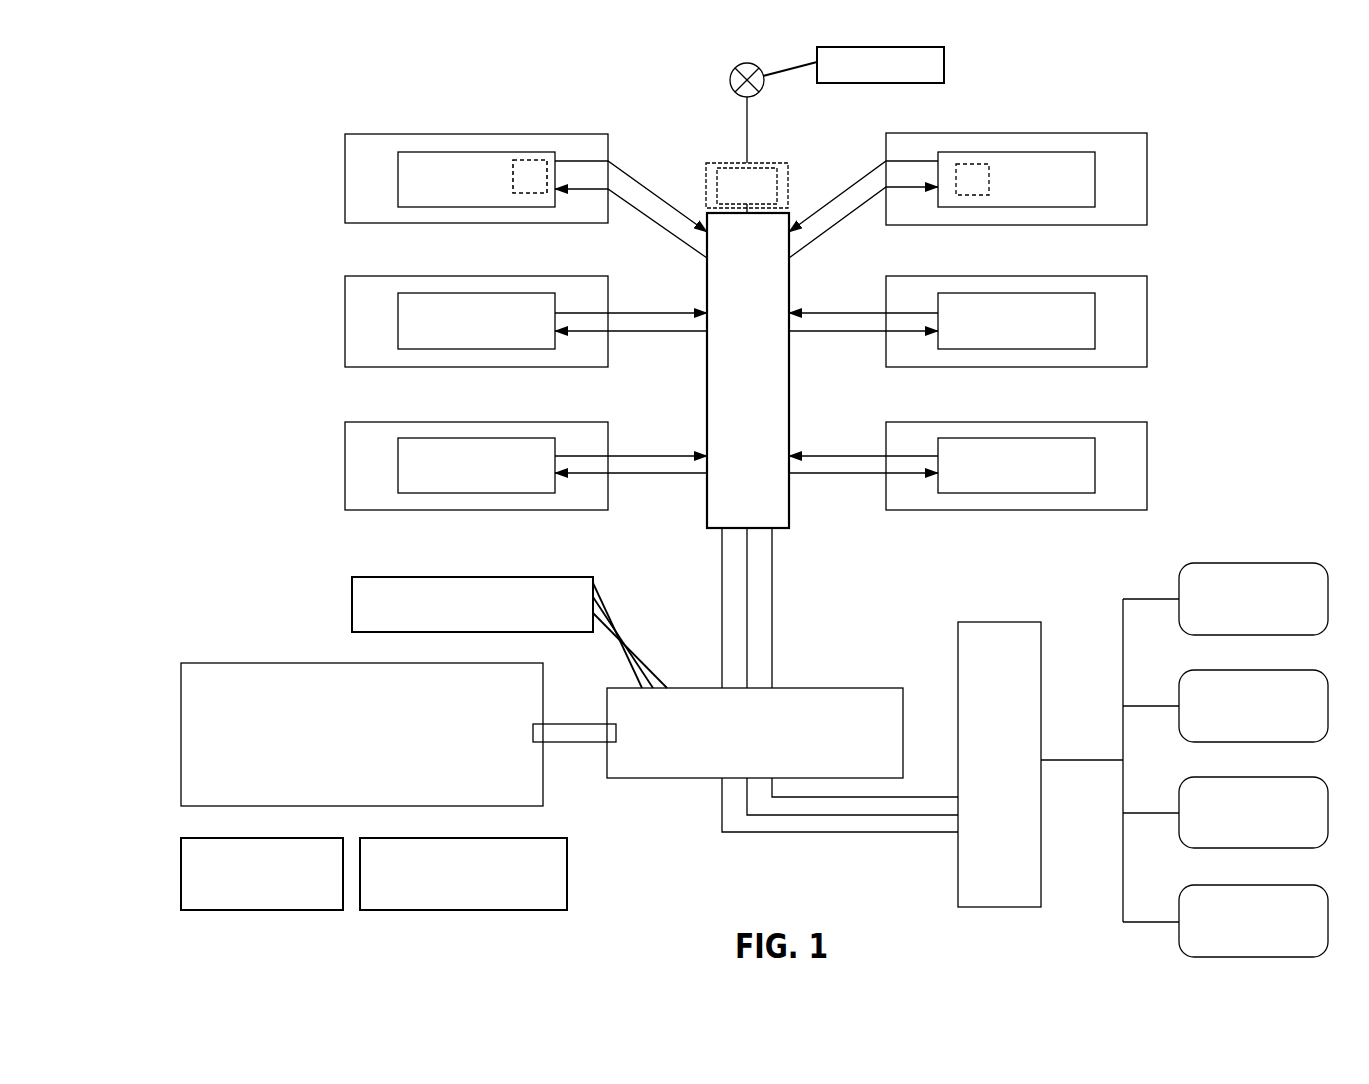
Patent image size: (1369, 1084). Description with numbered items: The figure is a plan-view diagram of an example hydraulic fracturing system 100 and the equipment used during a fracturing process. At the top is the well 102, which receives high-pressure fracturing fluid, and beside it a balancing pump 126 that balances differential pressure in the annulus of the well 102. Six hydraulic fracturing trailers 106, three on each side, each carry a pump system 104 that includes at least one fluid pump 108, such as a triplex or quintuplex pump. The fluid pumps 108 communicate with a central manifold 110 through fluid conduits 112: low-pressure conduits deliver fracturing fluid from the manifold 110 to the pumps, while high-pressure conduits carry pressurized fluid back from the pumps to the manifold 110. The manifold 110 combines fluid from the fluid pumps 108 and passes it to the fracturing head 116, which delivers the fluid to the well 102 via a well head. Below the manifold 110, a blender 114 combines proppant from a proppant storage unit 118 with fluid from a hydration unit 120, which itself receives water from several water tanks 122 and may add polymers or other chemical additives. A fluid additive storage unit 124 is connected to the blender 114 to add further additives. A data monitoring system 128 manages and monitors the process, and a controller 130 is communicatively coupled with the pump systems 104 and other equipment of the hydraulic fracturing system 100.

The hydraulic fracturing system 100 is at (172, 62).
The well 102 is at (733, 75).
The pump system 104 is at (462, 191).
The hydraulic fracturing trailer 106 is at (345, 134).
The fluid pump 108 is at (527, 160).
The manifold 110 is at (707, 378).
The fluid conduit 112 is at (826, 497).
The blender 114 is at (737, 744).
The fracturing head 116 is at (727, 198).
The proppant storage unit 118 is at (343, 744).
The hydration unit 120 is at (980, 774).
The water tank 122 is at (1234, 611).
The fluid additive storage unit 124 is at (452, 615).
The balancing pump 126 is at (860, 76).
The data monitoring system 128 is at (443, 884).
The controller 130 is at (242, 884).